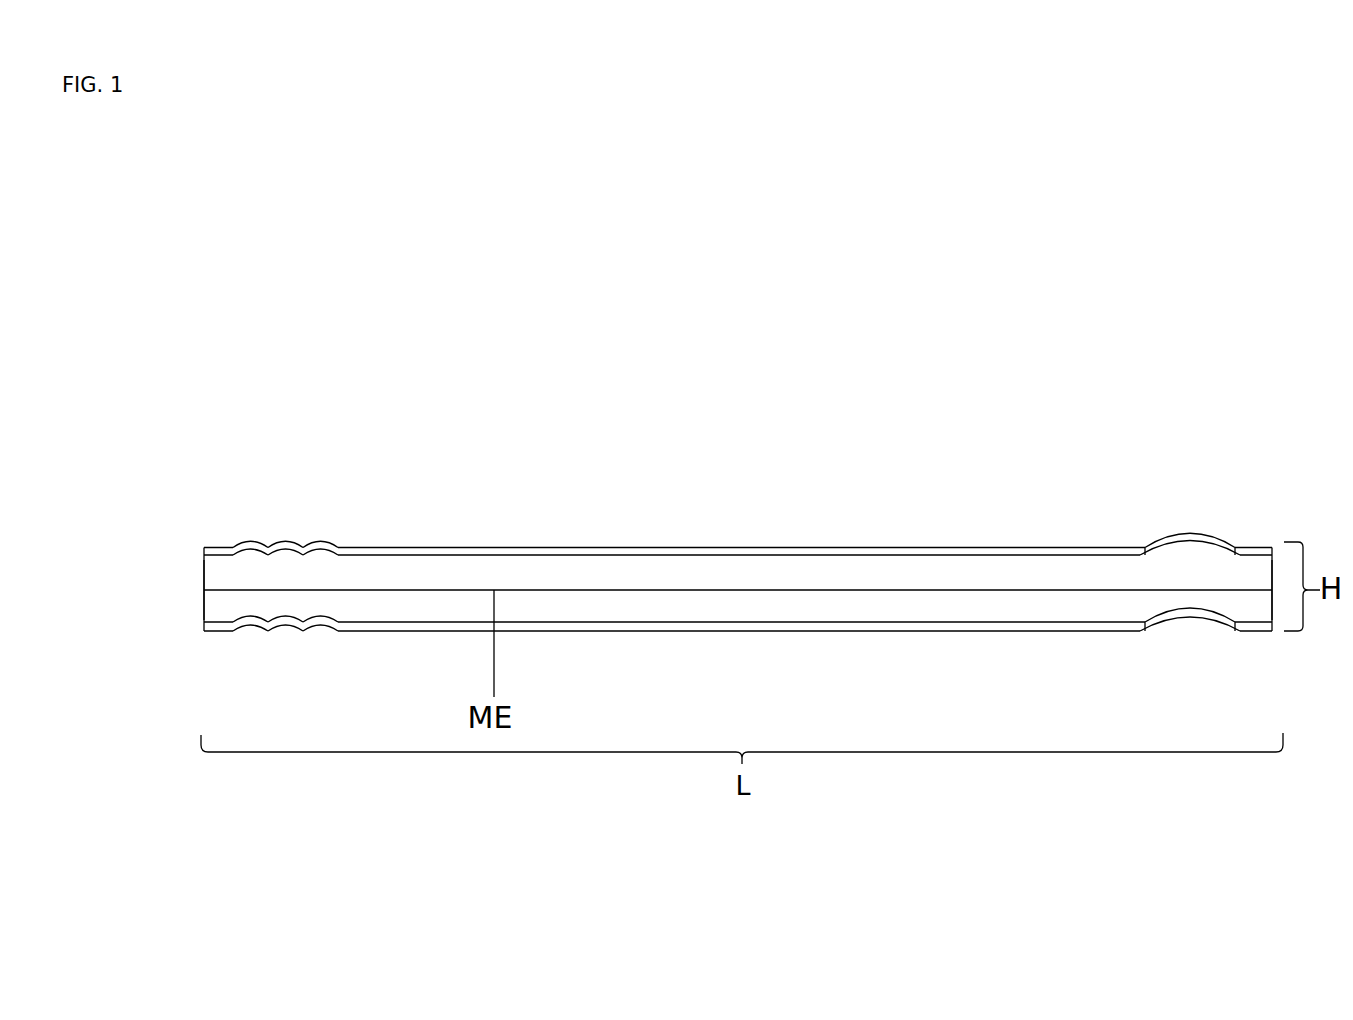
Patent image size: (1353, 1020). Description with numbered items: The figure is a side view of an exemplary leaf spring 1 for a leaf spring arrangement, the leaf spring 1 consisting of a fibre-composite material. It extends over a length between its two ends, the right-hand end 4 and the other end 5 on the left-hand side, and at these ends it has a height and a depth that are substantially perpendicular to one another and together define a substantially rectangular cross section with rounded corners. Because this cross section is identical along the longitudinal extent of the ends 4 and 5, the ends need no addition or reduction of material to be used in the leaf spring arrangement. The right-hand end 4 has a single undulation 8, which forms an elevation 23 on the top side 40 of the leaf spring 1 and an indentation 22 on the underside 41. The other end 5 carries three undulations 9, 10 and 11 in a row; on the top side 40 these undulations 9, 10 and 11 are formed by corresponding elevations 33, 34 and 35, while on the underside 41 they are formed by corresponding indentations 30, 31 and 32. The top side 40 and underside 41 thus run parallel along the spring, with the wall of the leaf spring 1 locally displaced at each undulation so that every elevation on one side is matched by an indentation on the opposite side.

The leaf spring 1 is at (697, 342).
The right-hand end 4 is at (1217, 460).
The other end 5 is at (243, 358).
The undulation 8 is at (1213, 521).
The undulation 9 is at (257, 537).
The undulation 10 is at (292, 537).
The undulation 11 is at (337, 541).
The indentation 22 is at (1180, 618).
The elevation 23 is at (1178, 527).
The indentation 30 is at (247, 633).
The indentation 31 is at (292, 630).
The indentation 32 is at (327, 630).
The elevation 33 is at (245, 538).
The elevation 34 is at (292, 537).
The elevation 35 is at (327, 537).
The top side 40 is at (853, 538).
The underside 41 is at (787, 628).